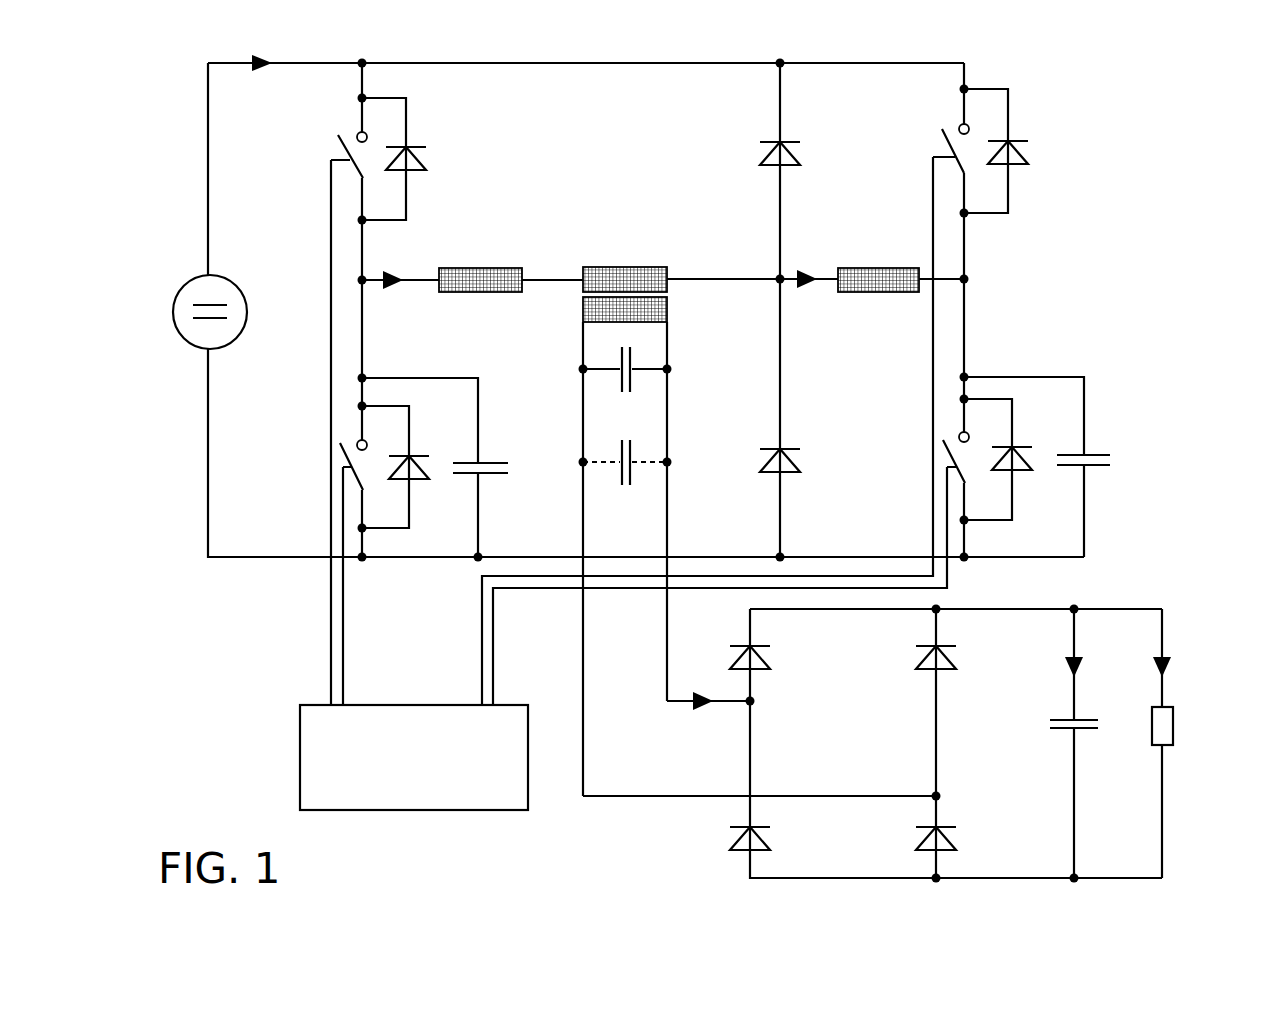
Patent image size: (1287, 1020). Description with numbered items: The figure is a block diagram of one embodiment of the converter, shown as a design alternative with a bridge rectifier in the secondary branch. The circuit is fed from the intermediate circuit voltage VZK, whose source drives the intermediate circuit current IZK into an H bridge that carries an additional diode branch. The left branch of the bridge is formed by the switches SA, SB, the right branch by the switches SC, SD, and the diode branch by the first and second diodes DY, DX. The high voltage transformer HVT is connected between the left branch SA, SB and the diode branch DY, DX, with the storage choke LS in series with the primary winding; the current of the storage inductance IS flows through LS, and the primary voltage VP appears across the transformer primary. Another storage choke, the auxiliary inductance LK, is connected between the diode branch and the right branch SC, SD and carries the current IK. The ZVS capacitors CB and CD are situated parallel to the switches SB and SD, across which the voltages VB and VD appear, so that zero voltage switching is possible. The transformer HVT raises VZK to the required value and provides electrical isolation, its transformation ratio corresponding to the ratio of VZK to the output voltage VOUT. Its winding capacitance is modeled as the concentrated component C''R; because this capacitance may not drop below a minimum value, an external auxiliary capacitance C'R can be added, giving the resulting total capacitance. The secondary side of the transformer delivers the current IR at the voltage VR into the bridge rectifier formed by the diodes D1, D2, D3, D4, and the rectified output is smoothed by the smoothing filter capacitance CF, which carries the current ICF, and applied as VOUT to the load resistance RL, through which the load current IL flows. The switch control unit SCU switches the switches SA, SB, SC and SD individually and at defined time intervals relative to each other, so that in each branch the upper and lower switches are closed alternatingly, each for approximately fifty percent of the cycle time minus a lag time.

The intermediate circuit current IZK is at (262, 85).
The intermediate circuit voltage VZK is at (260, 275).
The switch SA is at (359, 401).
The switch SB is at (361, 555).
The switch SC is at (755, 397).
The switch SD is at (762, 552).
The voltage by way of switch SB VB is at (278, 430).
The capacitance parallel to switch SB CB is at (447, 467).
The capacitance parallel to switch SD CD is at (1047, 467).
The voltage by way of switch SD VD is at (1139, 430).
The storage inductance current IS is at (400, 300).
The storage choke LS is at (511, 263).
The high voltage transformer HVT is at (759, 510).
The primary voltage VP is at (645, 213).
The winding capacitance C''R is at (625, 391).
The auxiliary capacitance C'R is at (625, 483).
The first diode DY is at (761, 151).
The second diode DX is at (761, 461).
The auxiliary inductance current IK is at (752, 299).
The auxiliary inductance LK is at (901, 261).
The switch control unit SCU is at (414, 757).
The transformer secondary side current IR is at (708, 680).
The capacitor voltage VR is at (663, 717).
The diode in the bridge rectifier D1 is at (774, 658).
The diode in the bridge rectifier D2 is at (774, 844).
The diode in the bridge rectifier D3 is at (919, 658).
The diode in the bridge rectifier D4 is at (919, 844).
The capacitance in the smoothing filter CF is at (1057, 743).
The smoothing filter current ICF is at (1094, 667).
The load resistance RL is at (1146, 743).
The load current IL is at (1174, 662).
The output voltage VOUT is at (1192, 690).